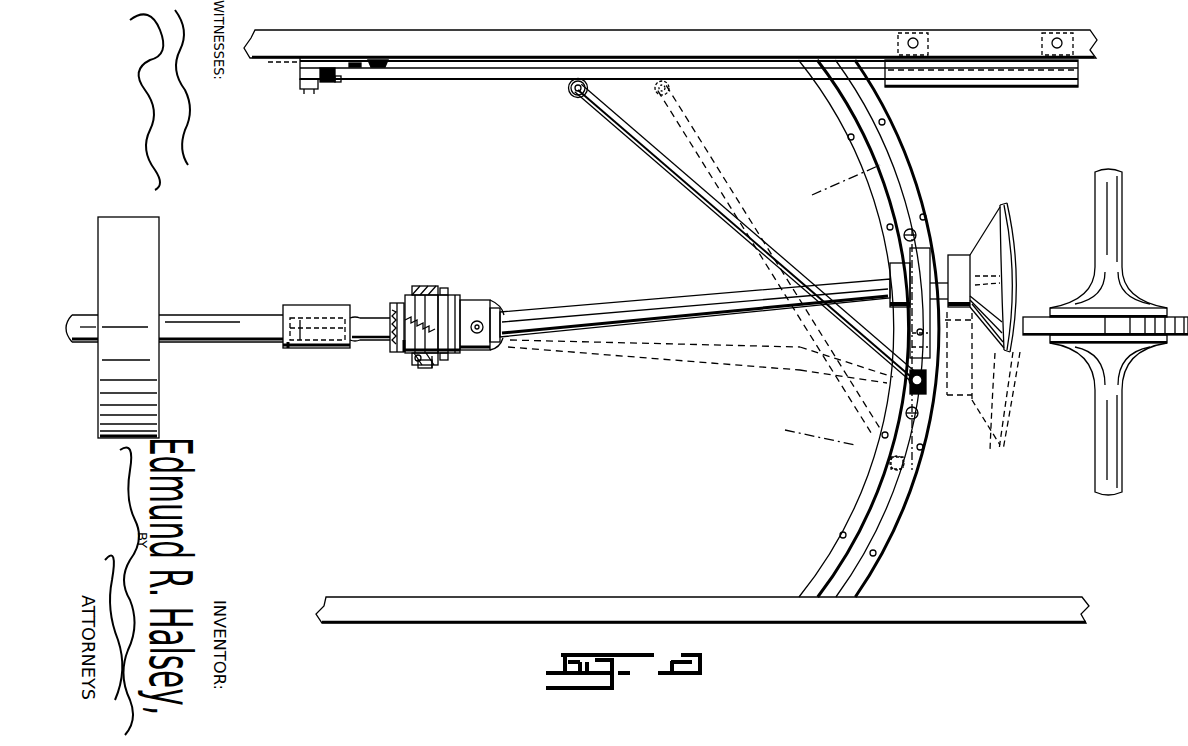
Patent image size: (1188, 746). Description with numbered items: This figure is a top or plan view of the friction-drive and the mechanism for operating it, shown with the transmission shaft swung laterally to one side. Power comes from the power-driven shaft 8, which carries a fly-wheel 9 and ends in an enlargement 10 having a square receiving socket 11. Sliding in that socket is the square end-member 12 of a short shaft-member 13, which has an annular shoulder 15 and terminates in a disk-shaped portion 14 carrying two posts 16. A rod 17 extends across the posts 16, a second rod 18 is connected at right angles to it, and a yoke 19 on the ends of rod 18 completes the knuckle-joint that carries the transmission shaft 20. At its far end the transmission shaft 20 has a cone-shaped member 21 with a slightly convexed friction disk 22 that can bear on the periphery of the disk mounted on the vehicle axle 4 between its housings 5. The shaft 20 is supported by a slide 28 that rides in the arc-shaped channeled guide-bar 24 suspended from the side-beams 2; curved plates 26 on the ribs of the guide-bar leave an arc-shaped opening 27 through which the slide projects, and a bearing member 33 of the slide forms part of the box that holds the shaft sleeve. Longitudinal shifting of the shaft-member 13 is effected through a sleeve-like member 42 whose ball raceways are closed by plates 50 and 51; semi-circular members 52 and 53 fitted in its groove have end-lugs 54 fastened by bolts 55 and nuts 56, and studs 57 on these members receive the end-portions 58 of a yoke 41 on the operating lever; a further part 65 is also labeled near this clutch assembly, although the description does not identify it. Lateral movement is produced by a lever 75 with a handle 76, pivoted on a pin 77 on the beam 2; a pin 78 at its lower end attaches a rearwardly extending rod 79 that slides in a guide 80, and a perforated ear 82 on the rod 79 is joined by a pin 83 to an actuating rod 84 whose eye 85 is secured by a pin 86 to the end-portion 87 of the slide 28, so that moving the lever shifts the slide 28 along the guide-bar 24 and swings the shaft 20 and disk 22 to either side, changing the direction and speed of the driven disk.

The side-beams 2 is at (525, 38).
The axle 4 is at (1122, 212).
The housings 5 is at (1143, 375).
The power-driven shaft 8 is at (205, 313).
The fly-wheel 9 is at (150, 248).
The enlargement 10 is at (302, 308).
The receiving socket 11 is at (288, 350).
The end-member 12 is at (320, 342).
The shaft-member 13 is at (380, 342).
The disk-shaped portion 14 is at (452, 296).
The annular shoulder 15 is at (360, 352).
The posts 16 is at (490, 302).
The rod 17 is at (494, 343).
The second rod 18 is at (505, 312).
The yoke 19 is at (505, 343).
The transmission shaft 20 is at (646, 302).
The cone-shaped member 21 is at (990, 232).
The friction disk 22 is at (1012, 218).
The guide-bar 24 is at (846, 128).
The curved plates 26 is at (915, 188).
The arc-shaped opening 27 is at (900, 175).
The slide 28 is at (892, 246).
The bearing member 33 is at (950, 256).
The yoke 41 is at (470, 298).
The sleeve-like member 42 is at (432, 368).
The plate 50 is at (456, 294).
The plate 51 is at (408, 312).
The semi-circular member 52 is at (416, 296).
The semi-circular member 53 is at (420, 368).
The end-lugs 54 is at (396, 304).
The bolts 55 is at (394, 303).
The nuts 56 is at (416, 362).
The studs 57 is at (424, 286).
The end-portions 58 is at (444, 288).
The spring 65 is at (394, 352).
The lever 75 is at (358, 62).
The handle 76 is at (390, 62).
The pin 77 is at (330, 82).
The pin 78 is at (307, 92).
The rod 79 is at (482, 80).
The guide 80 is at (1010, 84).
The perforated ear 82 is at (570, 90).
The pin 83 is at (577, 97).
The actuating rod 84 is at (660, 162).
The eye 85 is at (905, 382).
The pin 86 is at (925, 392).
The end-portion 87 is at (935, 360).